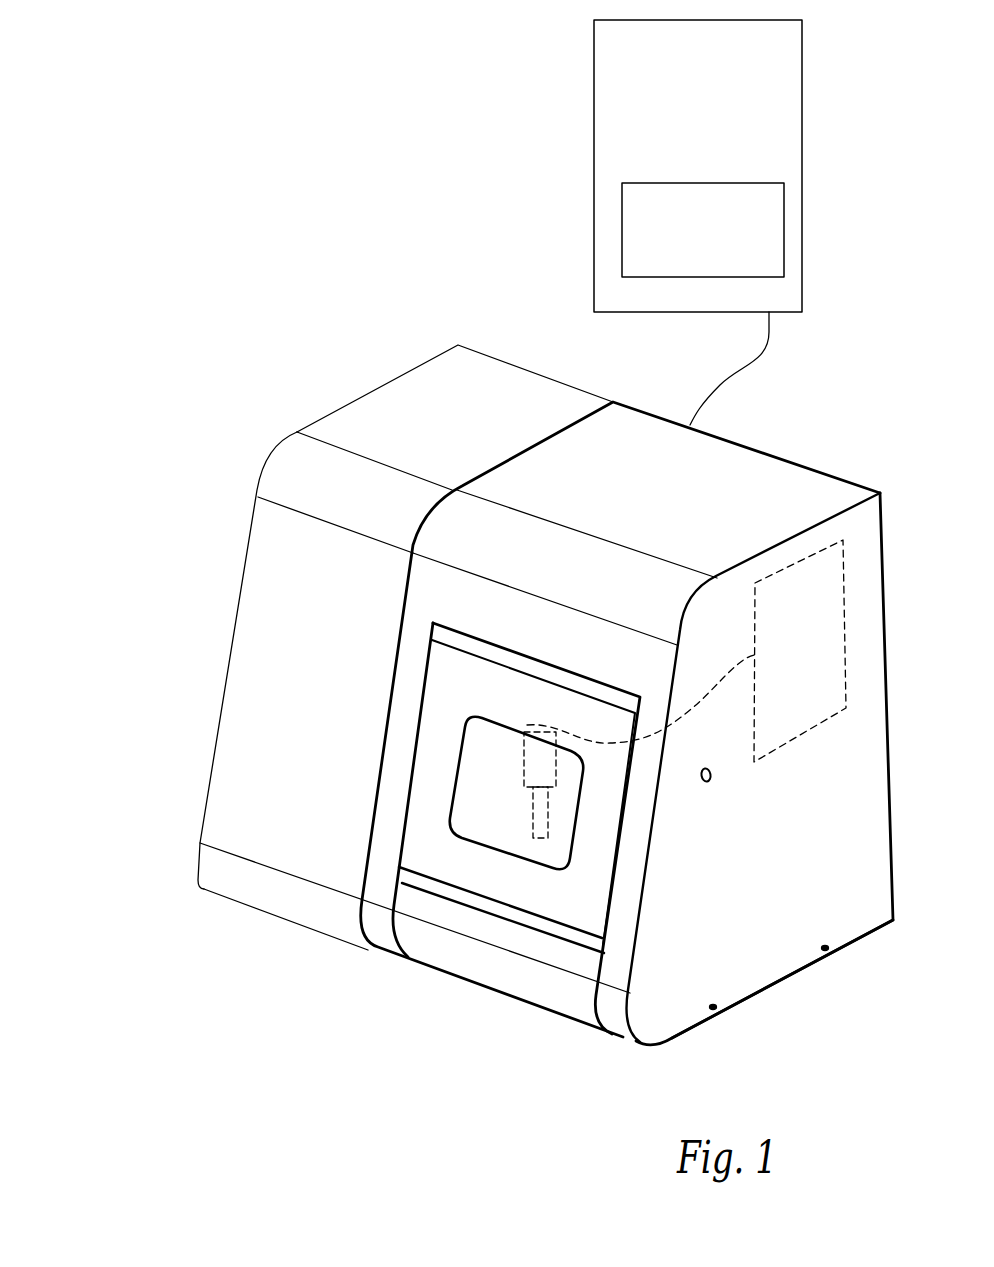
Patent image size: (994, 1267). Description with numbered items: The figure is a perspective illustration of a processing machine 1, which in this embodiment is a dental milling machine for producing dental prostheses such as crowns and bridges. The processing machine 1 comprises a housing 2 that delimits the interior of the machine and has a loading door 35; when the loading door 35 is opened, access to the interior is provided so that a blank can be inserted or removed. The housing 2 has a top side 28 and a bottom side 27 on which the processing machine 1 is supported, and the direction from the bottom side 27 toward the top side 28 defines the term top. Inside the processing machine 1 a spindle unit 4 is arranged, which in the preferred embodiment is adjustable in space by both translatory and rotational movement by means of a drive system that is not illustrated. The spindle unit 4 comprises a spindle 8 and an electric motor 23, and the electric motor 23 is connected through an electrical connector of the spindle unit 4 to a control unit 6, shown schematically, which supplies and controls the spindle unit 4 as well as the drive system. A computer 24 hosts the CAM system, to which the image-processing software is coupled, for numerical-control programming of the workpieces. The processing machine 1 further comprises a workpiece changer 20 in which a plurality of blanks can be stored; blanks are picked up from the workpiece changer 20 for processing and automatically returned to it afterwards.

The processing machine 1 is at (416, 317).
The housing 2 is at (795, 458).
The spindle unit 4 is at (518, 795).
The control unit 6 is at (830, 547).
The spindle 8 is at (543, 838).
The workpiece changer 20 is at (225, 685).
The electric motor 23 is at (524, 755).
The computer 24 is at (679, 124).
The bottom side 27 is at (752, 998).
The top side 28 is at (634, 501).
The loading door 35 is at (560, 925).